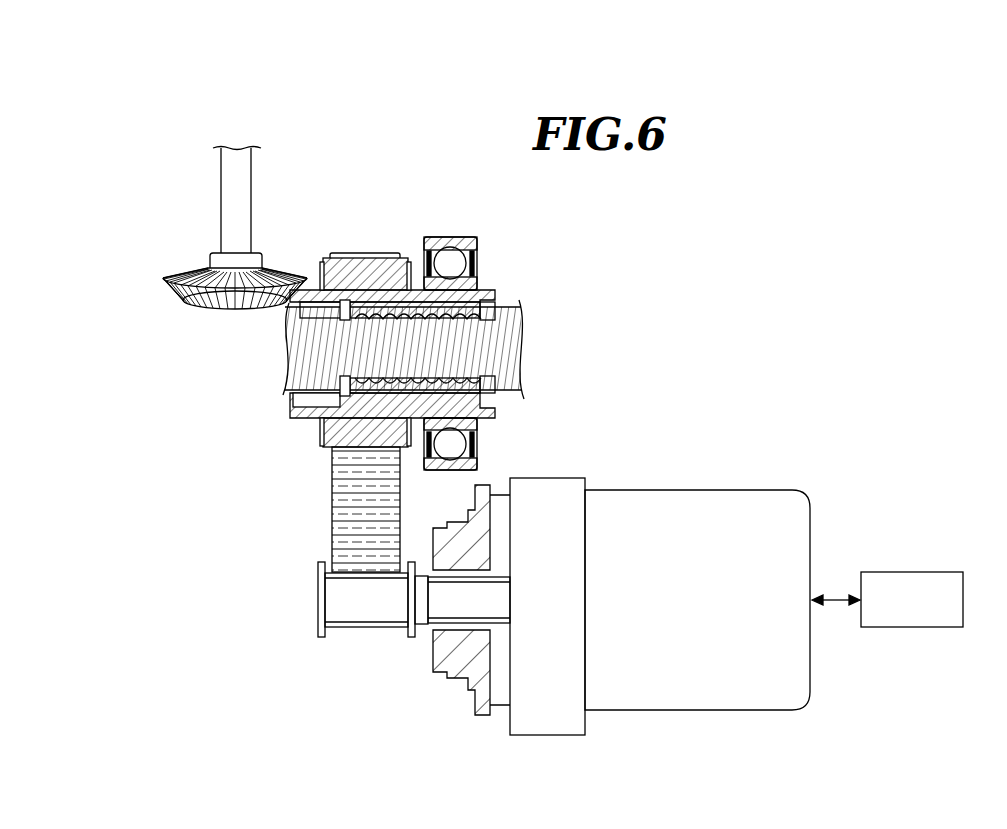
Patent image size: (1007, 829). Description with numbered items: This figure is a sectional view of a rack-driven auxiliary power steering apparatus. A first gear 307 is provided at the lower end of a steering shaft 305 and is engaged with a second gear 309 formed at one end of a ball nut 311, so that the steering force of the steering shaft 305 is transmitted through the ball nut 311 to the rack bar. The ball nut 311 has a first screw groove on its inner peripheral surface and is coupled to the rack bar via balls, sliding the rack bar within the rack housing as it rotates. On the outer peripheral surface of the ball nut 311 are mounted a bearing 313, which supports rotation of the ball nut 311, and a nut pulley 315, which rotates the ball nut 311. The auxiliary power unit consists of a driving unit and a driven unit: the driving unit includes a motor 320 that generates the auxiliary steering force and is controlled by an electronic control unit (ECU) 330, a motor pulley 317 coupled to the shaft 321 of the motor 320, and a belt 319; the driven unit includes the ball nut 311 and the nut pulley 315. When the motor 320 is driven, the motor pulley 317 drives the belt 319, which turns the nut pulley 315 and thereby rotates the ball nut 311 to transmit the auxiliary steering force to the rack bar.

The steering shaft 305 is at (247, 190).
The first gear 307 is at (175, 283).
The second gear 309 is at (293, 420).
The ball nut 311 is at (415, 300).
The bearing 313 is at (450, 262).
The nut pulley 315 is at (372, 276).
The motor pulley 317 is at (362, 625).
The belt 319 is at (338, 508).
The motor 320 is at (683, 698).
The shaft 321 is at (445, 662).
The electronic control unit (ECU) 330 is at (930, 571).